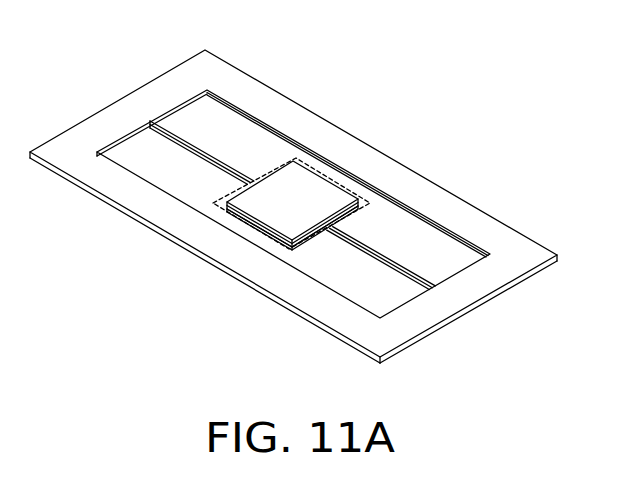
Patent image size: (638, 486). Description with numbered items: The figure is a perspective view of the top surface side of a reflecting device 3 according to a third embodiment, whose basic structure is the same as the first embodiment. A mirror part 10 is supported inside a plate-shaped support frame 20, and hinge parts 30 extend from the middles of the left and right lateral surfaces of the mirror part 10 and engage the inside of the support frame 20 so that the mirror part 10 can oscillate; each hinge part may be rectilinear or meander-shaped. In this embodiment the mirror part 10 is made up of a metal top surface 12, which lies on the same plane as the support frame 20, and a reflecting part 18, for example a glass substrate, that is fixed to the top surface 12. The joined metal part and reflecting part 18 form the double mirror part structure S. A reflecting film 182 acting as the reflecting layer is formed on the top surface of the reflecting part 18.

The reflecting device 3 is at (565, 52).
The mirror part 10 is at (341, 143).
The top surface of the mirror part 12 is at (356, 213).
The reflecting part 18 is at (312, 183).
The reflecting film 182 is at (323, 153).
The support frame 20 is at (312, 300).
The hinge part 30 is at (428, 277).
The double mirror part structure S is at (252, 223).